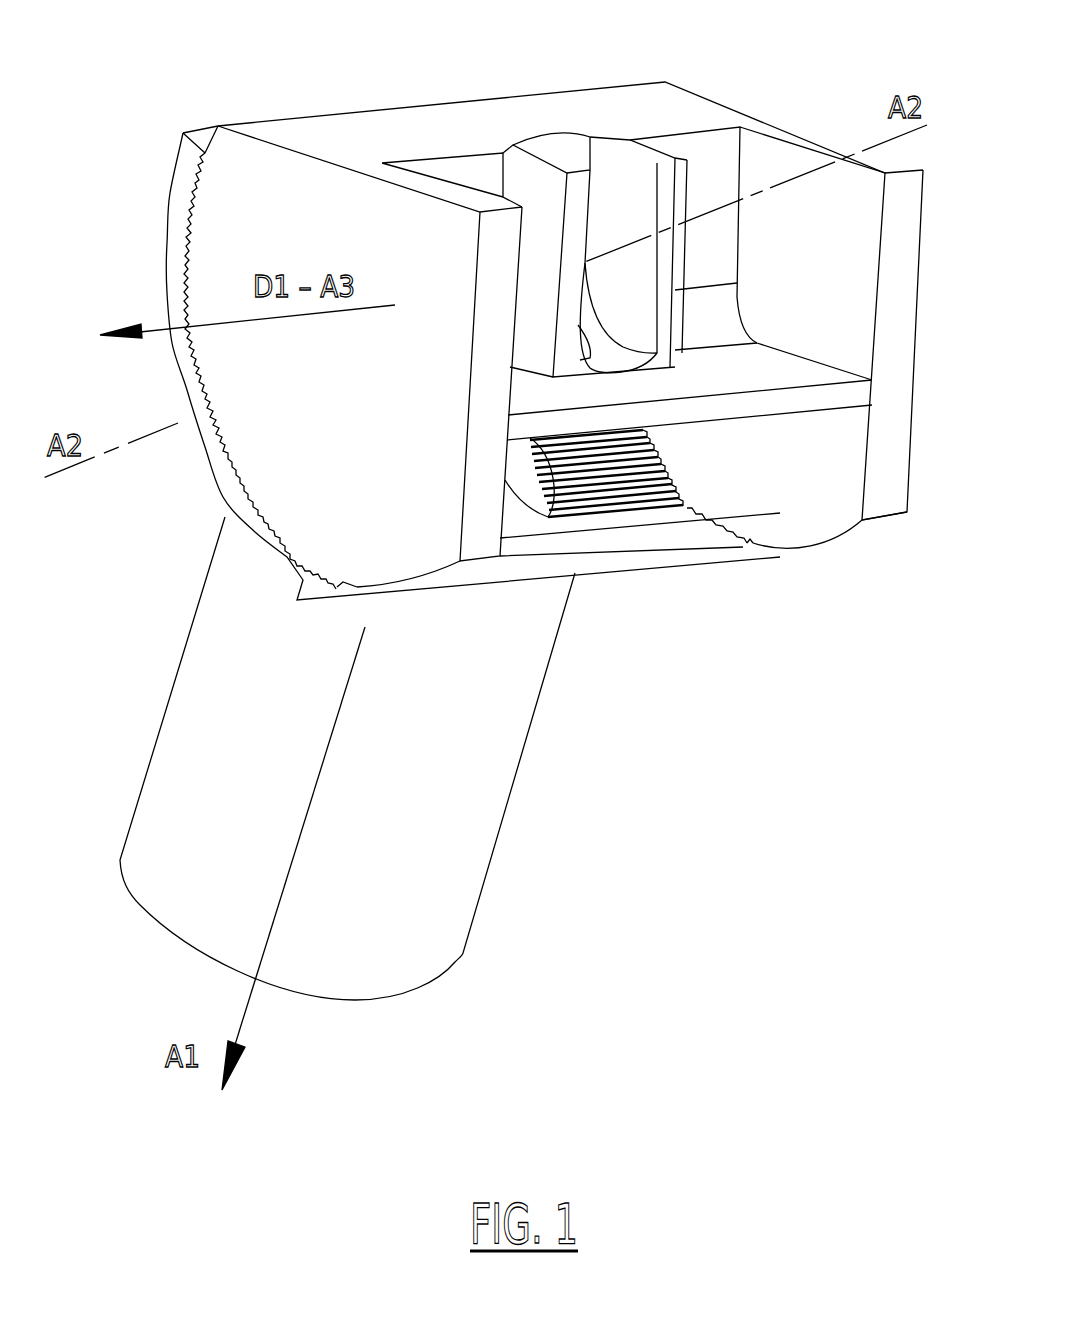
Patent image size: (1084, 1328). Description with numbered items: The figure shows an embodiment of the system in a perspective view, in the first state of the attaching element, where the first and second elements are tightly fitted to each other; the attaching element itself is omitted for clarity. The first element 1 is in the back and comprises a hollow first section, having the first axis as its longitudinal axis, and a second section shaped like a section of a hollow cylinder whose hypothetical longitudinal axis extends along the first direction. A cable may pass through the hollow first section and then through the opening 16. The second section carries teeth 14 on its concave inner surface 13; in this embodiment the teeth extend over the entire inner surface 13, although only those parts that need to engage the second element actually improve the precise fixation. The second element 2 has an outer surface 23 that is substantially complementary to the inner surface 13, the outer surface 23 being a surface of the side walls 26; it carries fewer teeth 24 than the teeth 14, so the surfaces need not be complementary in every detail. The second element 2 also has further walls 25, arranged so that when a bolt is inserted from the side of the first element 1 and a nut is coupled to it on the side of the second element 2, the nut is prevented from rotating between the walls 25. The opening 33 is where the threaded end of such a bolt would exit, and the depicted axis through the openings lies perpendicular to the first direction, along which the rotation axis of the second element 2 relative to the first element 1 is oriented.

The first element 1 is at (466, 883).
The second element 2 is at (665, 82).
The inner surface 13 is at (205, 153).
The teeth 14 is at (643, 515).
The opening 16 is at (510, 515).
The outer surface 23 is at (873, 525).
The teeth 24 is at (753, 543).
The further walls 25 is at (653, 157).
The side walls 26 is at (895, 307).
The opening 33 is at (597, 340).